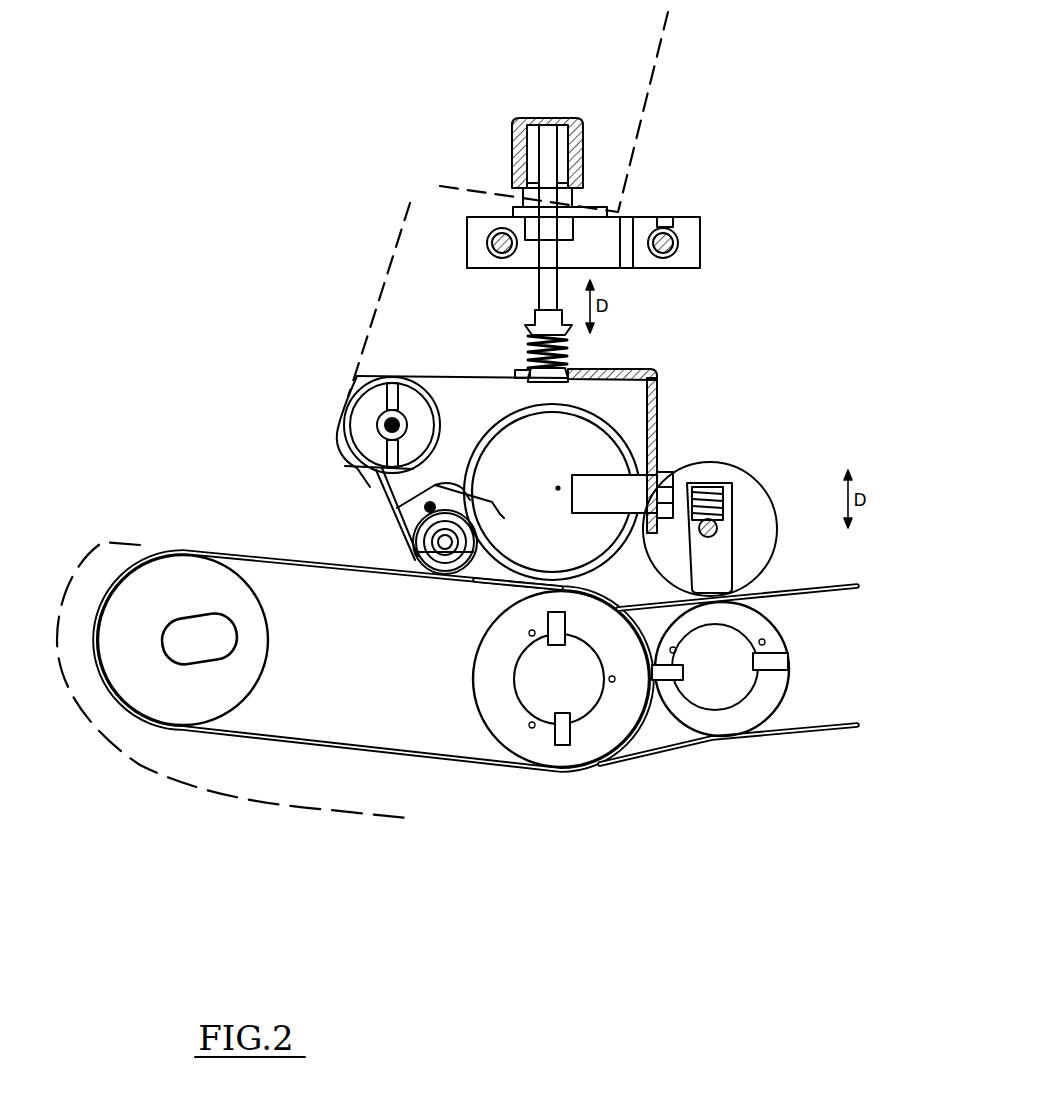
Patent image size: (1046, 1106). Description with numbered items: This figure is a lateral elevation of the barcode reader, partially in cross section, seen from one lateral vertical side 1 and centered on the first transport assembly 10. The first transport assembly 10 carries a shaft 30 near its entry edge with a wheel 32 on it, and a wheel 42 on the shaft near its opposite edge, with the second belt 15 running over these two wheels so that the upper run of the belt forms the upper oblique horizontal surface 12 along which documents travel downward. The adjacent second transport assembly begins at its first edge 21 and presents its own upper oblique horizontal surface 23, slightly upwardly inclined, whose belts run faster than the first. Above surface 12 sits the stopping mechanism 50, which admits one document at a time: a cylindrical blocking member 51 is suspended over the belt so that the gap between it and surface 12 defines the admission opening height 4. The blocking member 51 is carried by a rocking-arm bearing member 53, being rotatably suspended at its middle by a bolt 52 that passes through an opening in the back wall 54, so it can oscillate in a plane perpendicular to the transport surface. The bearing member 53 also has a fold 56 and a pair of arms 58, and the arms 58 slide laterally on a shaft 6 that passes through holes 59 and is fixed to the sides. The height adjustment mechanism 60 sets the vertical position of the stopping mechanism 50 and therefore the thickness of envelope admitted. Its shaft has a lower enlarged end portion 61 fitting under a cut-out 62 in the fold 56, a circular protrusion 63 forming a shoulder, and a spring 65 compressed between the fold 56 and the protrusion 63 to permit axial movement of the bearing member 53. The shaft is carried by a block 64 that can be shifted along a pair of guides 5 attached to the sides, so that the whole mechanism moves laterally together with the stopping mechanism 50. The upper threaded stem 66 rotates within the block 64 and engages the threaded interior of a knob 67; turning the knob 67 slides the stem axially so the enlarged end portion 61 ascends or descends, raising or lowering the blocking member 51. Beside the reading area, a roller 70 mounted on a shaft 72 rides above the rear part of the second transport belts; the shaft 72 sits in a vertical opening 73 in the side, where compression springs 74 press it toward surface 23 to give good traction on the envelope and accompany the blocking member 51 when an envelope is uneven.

The lateral vertical side 1 is at (323, 807).
The admission opening height 4 is at (520, 594).
The guides 5 is at (440, 186).
The shaft 6 is at (337, 423).
The first transport assembly 10 is at (473, 783).
The upper oblique horizontal surface 12 is at (112, 530).
The second belt 15 is at (240, 737).
The first edge 21 is at (753, 703).
The upper oblique horizontal surface 23 is at (832, 593).
The shaft 30 is at (173, 643).
The wheel 32 is at (205, 590).
The wheel 42 is at (606, 727).
The stopping mechanism 50 is at (278, 443).
The blocking member 51 is at (410, 503).
The bolt 52 is at (607, 476).
The bearing member 53 is at (695, 365).
The back wall 54 is at (658, 403).
The fold 56 is at (632, 368).
The arms 58 is at (365, 362).
The holes 59 is at (377, 425).
The height adjustment mechanism 60 is at (425, 162).
The lower enlarged end portion 61 is at (527, 387).
The cut-out 62 is at (523, 370).
The circular protrusion 63 is at (595, 360).
The block 64 is at (700, 248).
The spring 65 is at (512, 353).
The threaded stem 66 is at (585, 128).
The knob 67 is at (520, 117).
The roller 70 is at (733, 458).
The shaft 72 is at (720, 540).
The vertical opening 73 is at (730, 560).
The compression springs 74 is at (720, 500).